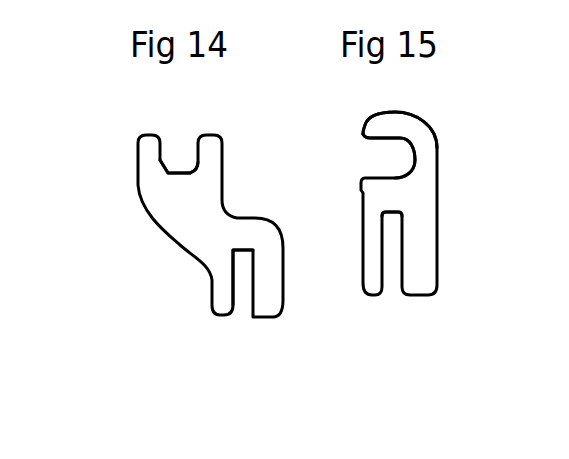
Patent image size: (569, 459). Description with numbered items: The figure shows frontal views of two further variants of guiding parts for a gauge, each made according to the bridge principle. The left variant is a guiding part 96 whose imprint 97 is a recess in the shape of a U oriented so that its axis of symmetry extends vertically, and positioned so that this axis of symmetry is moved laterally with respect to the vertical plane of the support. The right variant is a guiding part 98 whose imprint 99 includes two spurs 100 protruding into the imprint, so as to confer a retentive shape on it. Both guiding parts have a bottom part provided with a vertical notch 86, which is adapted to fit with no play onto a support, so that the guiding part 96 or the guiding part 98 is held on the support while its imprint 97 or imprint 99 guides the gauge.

In FIG. 14, the guiding part 96 is at (165, 244).
In FIG. 14, the imprint 97 is at (177, 153).
In FIG. 14, the vertical notch 86 is at (245, 287).
In FIG. 15, the vertical notch 86 is at (392, 270).
In FIG. 15, the guiding part 98 is at (454, 221).
In FIG. 15, the imprint 99 is at (406, 153).
In FIG. 15, the spurs 100 is at (375, 177).